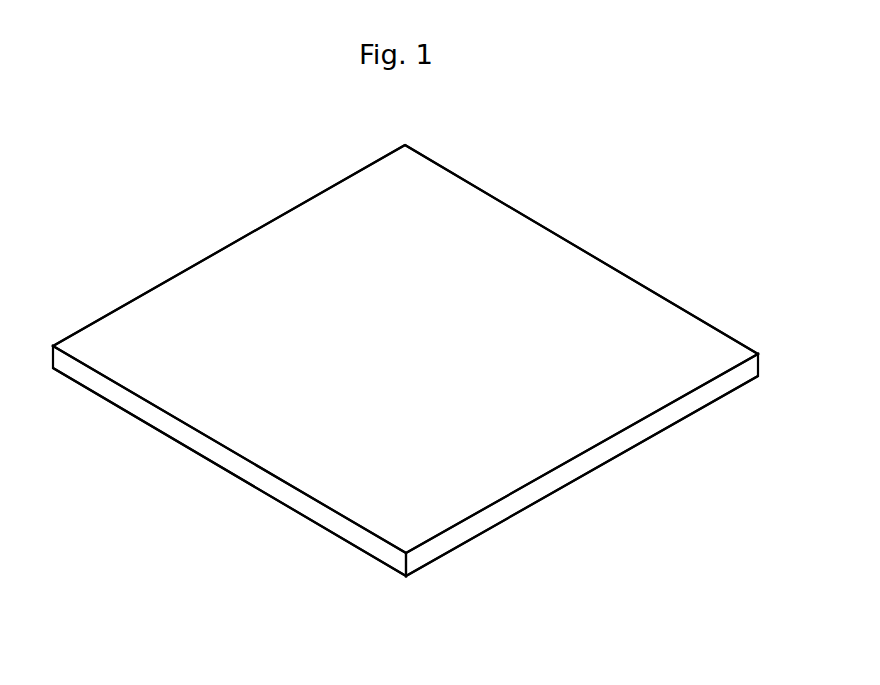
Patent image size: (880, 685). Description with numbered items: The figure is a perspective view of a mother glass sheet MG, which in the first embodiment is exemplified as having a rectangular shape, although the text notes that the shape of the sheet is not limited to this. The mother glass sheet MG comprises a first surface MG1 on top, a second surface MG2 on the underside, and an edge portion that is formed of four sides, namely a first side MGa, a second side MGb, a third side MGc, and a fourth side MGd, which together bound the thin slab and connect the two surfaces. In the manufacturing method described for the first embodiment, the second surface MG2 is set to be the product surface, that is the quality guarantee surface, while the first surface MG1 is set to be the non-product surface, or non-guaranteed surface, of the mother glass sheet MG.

The mother glass sheet MG is at (405, 346).
The first surface MG1 is at (278, 460).
The second surface MG2 is at (277, 502).
The first side MGa is at (167, 415).
The second side MGb is at (513, 495).
The third side MGc is at (615, 268).
The fourth side MGd is at (202, 262).